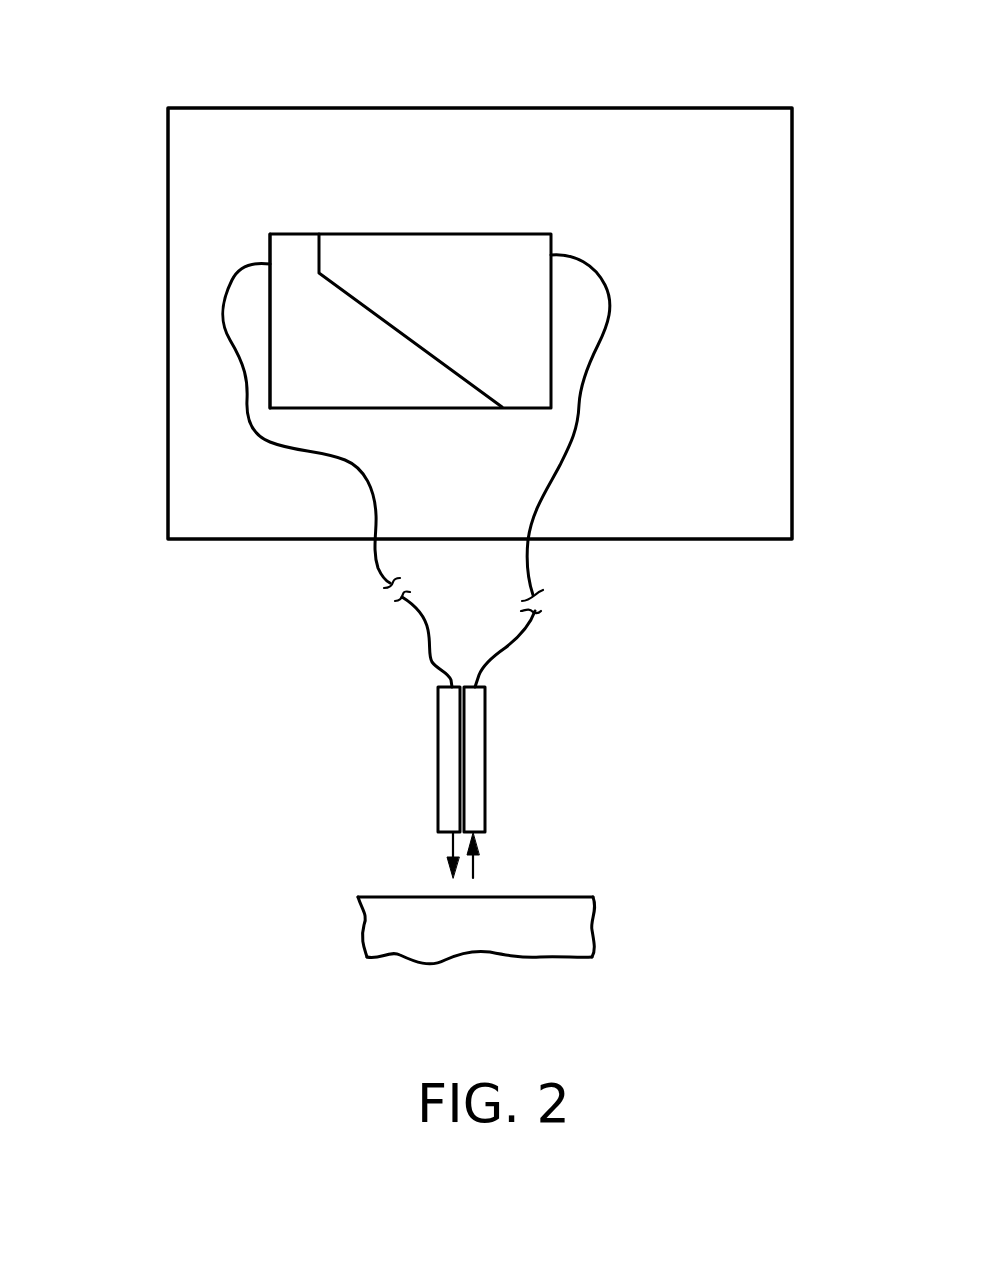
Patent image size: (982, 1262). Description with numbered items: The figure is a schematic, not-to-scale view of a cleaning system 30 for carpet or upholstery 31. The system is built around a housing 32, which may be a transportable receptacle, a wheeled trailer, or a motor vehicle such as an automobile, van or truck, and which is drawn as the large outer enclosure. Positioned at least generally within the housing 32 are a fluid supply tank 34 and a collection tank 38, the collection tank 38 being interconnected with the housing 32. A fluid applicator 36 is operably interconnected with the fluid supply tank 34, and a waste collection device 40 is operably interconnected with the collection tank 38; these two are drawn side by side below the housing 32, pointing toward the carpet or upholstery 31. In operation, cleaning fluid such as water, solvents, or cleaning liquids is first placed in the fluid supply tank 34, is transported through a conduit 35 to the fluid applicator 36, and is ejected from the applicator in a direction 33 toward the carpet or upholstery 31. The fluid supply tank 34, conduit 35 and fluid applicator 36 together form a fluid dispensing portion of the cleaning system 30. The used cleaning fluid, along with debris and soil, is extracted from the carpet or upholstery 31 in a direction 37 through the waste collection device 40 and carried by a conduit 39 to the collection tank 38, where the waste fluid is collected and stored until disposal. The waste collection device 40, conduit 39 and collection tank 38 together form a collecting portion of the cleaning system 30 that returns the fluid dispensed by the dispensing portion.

The cleaning system 30 is at (232, 740).
The carpet or upholstery 31 is at (476, 930).
The housing 32 is at (447, 108).
The direction 33 is at (448, 852).
The fluid supply tank 34 is at (290, 233).
The conduit 35 is at (377, 562).
The fluid applicator 36 is at (438, 740).
The direction 37 is at (477, 868).
The collection tank 38 is at (523, 233).
The conduit 39 is at (533, 558).
The waste collection device 40 is at (483, 765).